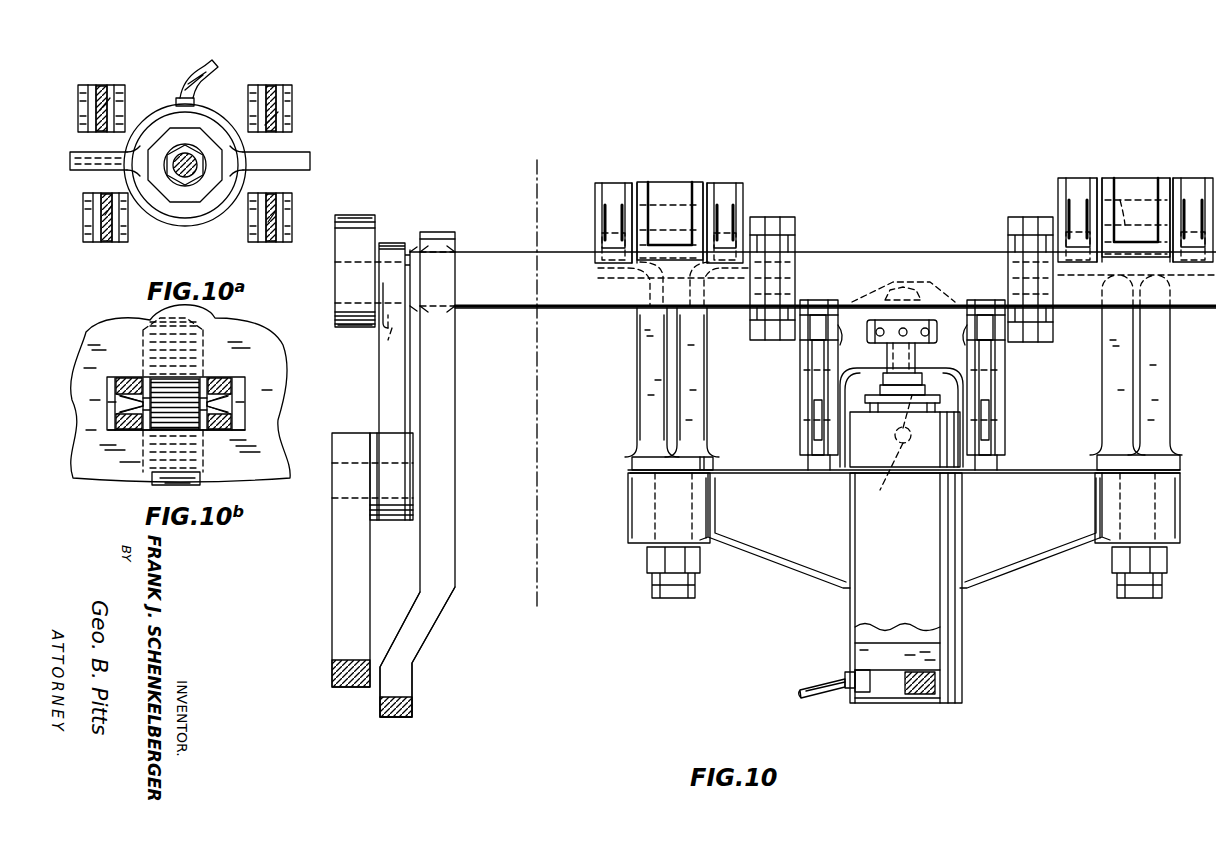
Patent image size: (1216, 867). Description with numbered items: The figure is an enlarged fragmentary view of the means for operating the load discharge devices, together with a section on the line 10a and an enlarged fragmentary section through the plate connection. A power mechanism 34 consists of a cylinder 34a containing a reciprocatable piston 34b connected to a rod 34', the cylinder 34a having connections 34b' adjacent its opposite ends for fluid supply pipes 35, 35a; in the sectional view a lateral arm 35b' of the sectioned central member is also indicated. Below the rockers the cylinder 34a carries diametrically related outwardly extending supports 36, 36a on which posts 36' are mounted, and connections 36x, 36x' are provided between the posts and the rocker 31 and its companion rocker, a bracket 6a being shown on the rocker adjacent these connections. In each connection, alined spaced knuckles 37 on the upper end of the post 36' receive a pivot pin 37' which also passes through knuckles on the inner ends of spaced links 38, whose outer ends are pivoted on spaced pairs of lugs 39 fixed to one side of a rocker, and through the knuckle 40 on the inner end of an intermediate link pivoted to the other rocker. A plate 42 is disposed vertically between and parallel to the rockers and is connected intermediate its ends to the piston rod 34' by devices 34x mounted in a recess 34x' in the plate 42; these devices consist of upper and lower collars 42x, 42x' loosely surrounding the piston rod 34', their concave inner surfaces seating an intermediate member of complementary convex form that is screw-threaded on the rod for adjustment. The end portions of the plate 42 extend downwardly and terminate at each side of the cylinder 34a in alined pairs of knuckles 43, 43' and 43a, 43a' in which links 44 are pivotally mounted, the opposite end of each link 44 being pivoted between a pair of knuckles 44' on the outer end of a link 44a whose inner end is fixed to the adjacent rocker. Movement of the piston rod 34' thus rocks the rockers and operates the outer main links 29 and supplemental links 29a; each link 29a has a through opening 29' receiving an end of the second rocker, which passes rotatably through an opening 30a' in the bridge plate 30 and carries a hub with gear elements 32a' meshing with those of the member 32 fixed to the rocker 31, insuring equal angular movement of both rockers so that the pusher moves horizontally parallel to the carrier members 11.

In FIG. 10, the clamp bracket 6a is at (775, 217).
In FIG. 10, the section line 10a is at (800, 388).
In FIG. 10, the carrier members 11 is at (558, 606).
In FIG. 10, the outer main links 29 is at (346, 560).
In FIG. 10, the through opening 29' is at (433, 465).
In FIG. 10, the outer supplemental links 29a is at (445, 440).
In FIG. 10, the bridge plates 30 is at (395, 392).
In FIG. 10, the opening 30a' is at (357, 339).
In FIG. 10, the rocker 31 is at (493, 300).
In FIG. 10, the hub member 32 is at (365, 242).
In FIG. 10, the gear elements 32a' is at (360, 250).
In FIG. 10, the power mechanism 34 is at (922, 523).
In FIG. 10B, the piston rod 34' is at (142, 488).
In FIG. 10A, the cylinder 34a is at (184, 228).
In FIG. 10, the cylinder 34a is at (856, 607).
In FIG. 10, the piston 34b is at (933, 671).
In FIG. 10, the connections 34b' is at (849, 541).
In FIG. 10B, the connecting devices 34x is at (216, 393).
In FIG. 10, the connecting devices 34x is at (915, 301).
In FIG. 10B, the recess 34x' is at (122, 347).
In FIG. 10, the recess 34x' is at (896, 304).
In FIG. 10, the fluid supply pipe 35 is at (810, 699).
In FIG. 10A, the fluid supply pipe 35a is at (205, 74).
In FIG. 10, the fluid supply pipe 35a is at (910, 440).
In FIG. 10A, the arm 35b' is at (85, 176).
In FIG. 10, the support 36 is at (902, 453).
In FIG. 10, the post 36' is at (649, 379).
In FIG. 10, the support 36a is at (1040, 555).
In FIG. 10, the connection 36x is at (1137, 281).
In FIG. 10, the connection 36x' is at (648, 247).
In FIG. 10, the knuckles 37 is at (883, 208).
In FIG. 10, the pivot pin 37' is at (881, 229).
In FIG. 10, the links 38 is at (610, 183).
In FIG. 10, the lugs 39 is at (620, 262).
In FIG. 10, the knuckle 40 is at (668, 182).
In FIG. 10B, the plate 42 is at (194, 393).
In FIG. 10, the plate 42 is at (903, 263).
In FIG. 10B, the upper collar 42x is at (215, 398).
In FIG. 10B, the lower collar 42x' is at (217, 424).
In FIG. 10A, the knuckle 43 is at (85, 217).
In FIG. 10, the knuckle 43 is at (802, 479).
In FIG. 10A, the knuckle 43' is at (106, 87).
In FIG. 10A, the knuckle 43a is at (294, 211).
In FIG. 10, the knuckle 43a is at (998, 478).
In FIG. 10A, the knuckle 43a' is at (282, 87).
In FIG. 10A, the links 44 is at (197, 165).
In FIG. 10, the links 44 is at (892, 397).
In FIG. 10, the knuckles 44' is at (901, 342).
In FIG. 10, the link 44a is at (820, 305).